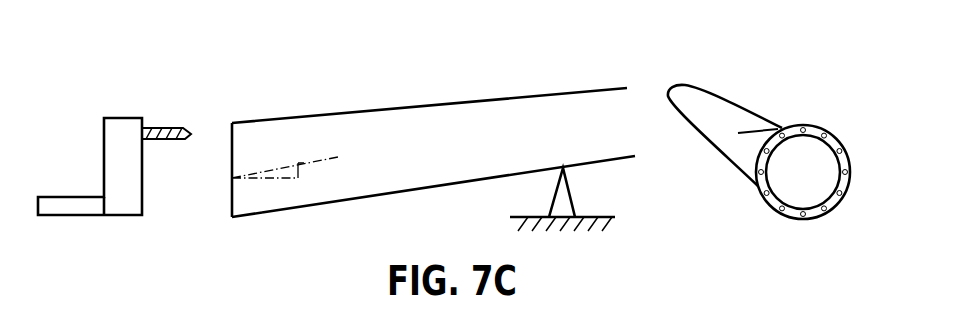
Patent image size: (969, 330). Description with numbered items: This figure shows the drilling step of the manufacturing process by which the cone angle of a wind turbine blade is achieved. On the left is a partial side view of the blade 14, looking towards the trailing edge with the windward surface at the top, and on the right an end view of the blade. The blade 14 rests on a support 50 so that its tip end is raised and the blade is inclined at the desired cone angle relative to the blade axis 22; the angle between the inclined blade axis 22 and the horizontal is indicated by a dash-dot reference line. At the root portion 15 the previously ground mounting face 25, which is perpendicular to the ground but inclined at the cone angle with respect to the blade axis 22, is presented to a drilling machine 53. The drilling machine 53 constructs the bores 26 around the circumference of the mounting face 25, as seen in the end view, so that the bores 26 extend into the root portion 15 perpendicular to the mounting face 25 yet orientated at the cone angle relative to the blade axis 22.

The drilling machine 53 is at (122, 117).
The mounting face 25 is at (230, 137).
The root portion 15 is at (240, 211).
The blade 14 is at (553, 150).
The blade axis 22 is at (330, 155).
The support 50 is at (568, 193).
The bores 26 is at (823, 210).